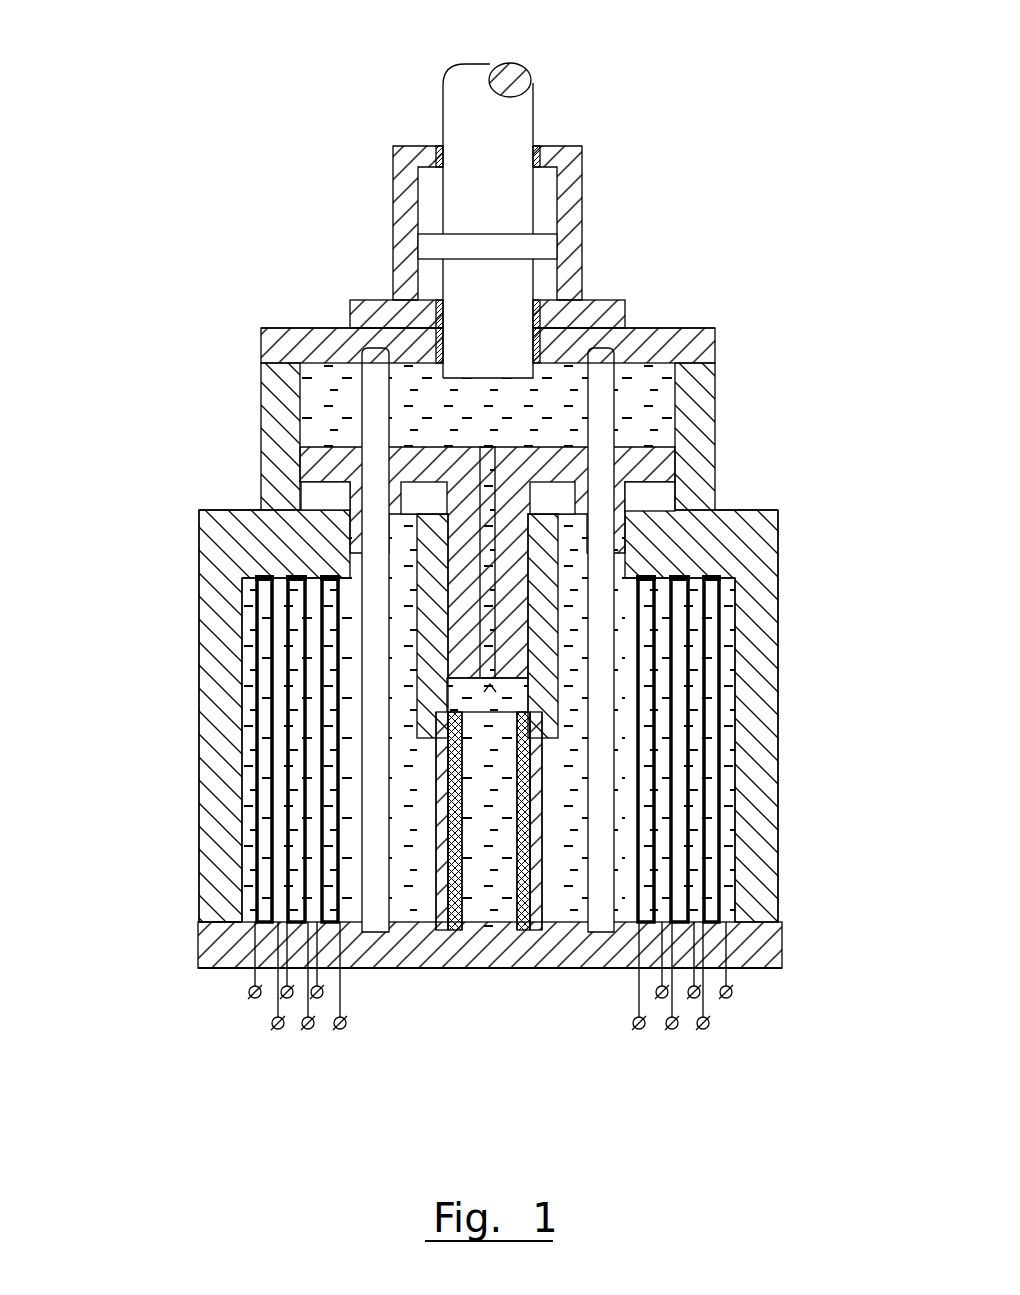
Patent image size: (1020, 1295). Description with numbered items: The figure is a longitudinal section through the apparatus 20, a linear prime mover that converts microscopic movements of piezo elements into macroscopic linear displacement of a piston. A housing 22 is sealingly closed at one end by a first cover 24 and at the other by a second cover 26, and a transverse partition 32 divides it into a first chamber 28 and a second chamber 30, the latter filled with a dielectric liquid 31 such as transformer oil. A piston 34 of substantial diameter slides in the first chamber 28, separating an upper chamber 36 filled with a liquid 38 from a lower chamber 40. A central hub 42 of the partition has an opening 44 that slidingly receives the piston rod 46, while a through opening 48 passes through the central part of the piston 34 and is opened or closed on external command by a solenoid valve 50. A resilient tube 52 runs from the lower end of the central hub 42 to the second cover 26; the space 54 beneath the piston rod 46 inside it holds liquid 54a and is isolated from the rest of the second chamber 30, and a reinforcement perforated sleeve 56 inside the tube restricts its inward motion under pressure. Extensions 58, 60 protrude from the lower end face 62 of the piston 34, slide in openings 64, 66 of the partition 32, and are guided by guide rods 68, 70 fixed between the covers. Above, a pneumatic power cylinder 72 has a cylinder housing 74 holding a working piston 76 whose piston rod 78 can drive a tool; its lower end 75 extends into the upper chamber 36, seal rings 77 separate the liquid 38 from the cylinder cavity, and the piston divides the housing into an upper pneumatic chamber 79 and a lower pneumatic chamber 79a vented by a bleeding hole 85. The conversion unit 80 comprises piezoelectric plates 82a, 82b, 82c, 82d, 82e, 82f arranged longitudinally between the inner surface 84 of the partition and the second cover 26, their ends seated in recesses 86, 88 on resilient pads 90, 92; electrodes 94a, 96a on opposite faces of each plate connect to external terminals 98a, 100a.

The apparatus 20 is at (252, 107).
The housing 22 is at (700, 375).
The first cover 24 is at (628, 326).
The second cover 26 is at (757, 952).
The first chamber 28 is at (712, 340).
The second chamber 30 is at (240, 632).
The dielectric liquid 31 is at (258, 682).
The transverse partition 32 is at (228, 512).
The piston 34 is at (700, 425).
The upper chamber 36 is at (305, 410).
The liquid 38 is at (298, 368).
The lower chamber 40 is at (680, 496).
The central hub 42 is at (513, 667).
The opening 44 is at (557, 712).
The piston rod 46 is at (492, 686).
The through opening 48 is at (500, 645).
The solenoid valve 50 is at (558, 732).
The tube 52 is at (474, 925).
The space 54 is at (487, 928).
The liquid 54a is at (506, 930).
The reinforcement perforated sleeve 56 is at (530, 930).
The extension 58 is at (355, 484).
The extension 60 is at (618, 533).
The lower end face of the piston 62 is at (662, 500).
The opening 64 is at (350, 568).
The opening 66 is at (620, 568).
The guide rod 68 is at (383, 935).
The guide rod 70 is at (601, 935).
The power cylinder 72 is at (571, 193).
The cylinder housing 74 is at (575, 207).
The lower end of piston rod 75 is at (517, 287).
The working piston 76 is at (537, 247).
The seal rings 77 is at (540, 312).
The piston rod 78 is at (515, 122).
The upper pneumatic chamber 79 is at (430, 182).
The lower pneumatic chamber 79a is at (433, 268).
The conversion unit 80 is at (250, 725).
The piezoelectric plate 82a is at (268, 790).
The piezoelectric plate 82b is at (300, 838).
The piezoelectric plate 82c is at (330, 878).
The piezoelectric plate 82d is at (715, 840).
The piezoelectric plate 82e is at (690, 858).
The piezoelectric plate 82f is at (660, 878).
The inner surface of partition 84 is at (258, 582).
The bleeding hole 85 is at (428, 260).
The recess 86 is at (255, 972).
The recess 88 is at (737, 970).
The resilient pad 90 is at (627, 578).
The resilient pad 92 is at (250, 576).
The electrode 94a is at (708, 612).
The electrode 96a is at (690, 660).
The external terminal 98a is at (246, 980).
The external terminal 100a is at (278, 1030).